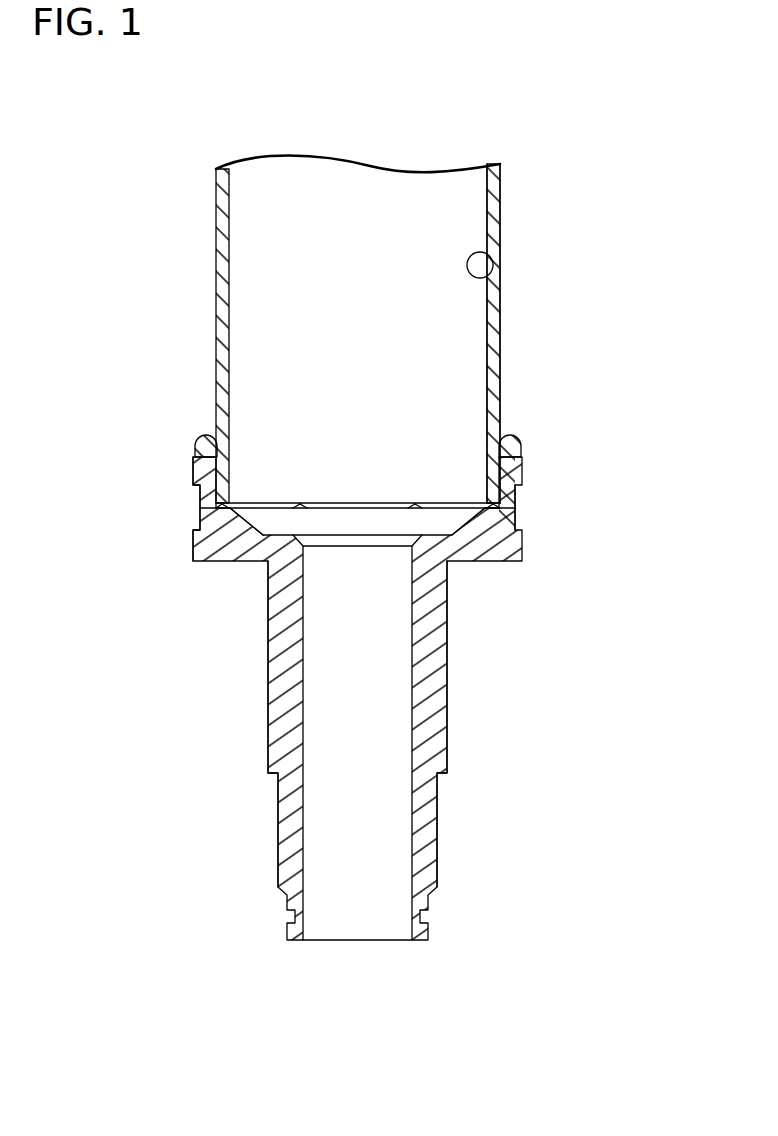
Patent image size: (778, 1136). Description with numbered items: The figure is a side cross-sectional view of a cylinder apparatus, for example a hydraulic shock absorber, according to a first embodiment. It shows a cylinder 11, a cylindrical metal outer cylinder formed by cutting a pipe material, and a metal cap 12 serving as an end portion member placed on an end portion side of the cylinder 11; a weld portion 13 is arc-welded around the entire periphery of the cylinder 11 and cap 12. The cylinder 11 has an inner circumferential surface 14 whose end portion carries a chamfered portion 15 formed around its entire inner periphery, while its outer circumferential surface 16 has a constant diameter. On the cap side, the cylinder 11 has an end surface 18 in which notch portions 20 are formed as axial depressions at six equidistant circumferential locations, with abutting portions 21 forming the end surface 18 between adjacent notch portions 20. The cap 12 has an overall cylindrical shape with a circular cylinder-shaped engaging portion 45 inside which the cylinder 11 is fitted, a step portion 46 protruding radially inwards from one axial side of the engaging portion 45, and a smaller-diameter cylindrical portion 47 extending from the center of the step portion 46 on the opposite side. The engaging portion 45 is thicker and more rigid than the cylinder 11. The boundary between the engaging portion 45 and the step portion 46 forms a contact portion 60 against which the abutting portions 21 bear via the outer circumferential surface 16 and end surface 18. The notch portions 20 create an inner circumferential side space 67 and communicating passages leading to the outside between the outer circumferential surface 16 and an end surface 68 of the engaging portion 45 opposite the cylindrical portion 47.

The cylinder 11 is at (508, 218).
The cap 12 is at (456, 750).
The weld portion 13 is at (513, 437).
The inner circumferential surface 14 is at (497, 277).
The chamfered portion 15 is at (352, 503).
The outer circumferential surface 16 is at (500, 327).
The end surface 18 is at (452, 508).
The notch portions 20 is at (490, 506).
The abutting portions 21 is at (470, 507).
The engaging portion 45 is at (202, 470).
The step portion 46 is at (262, 510).
The cylindrical portion 47 is at (268, 723).
The contact portion 60 is at (497, 507).
The inner circumferential side space 67 is at (438, 518).
The end surface of engaging portion 68 is at (202, 450).